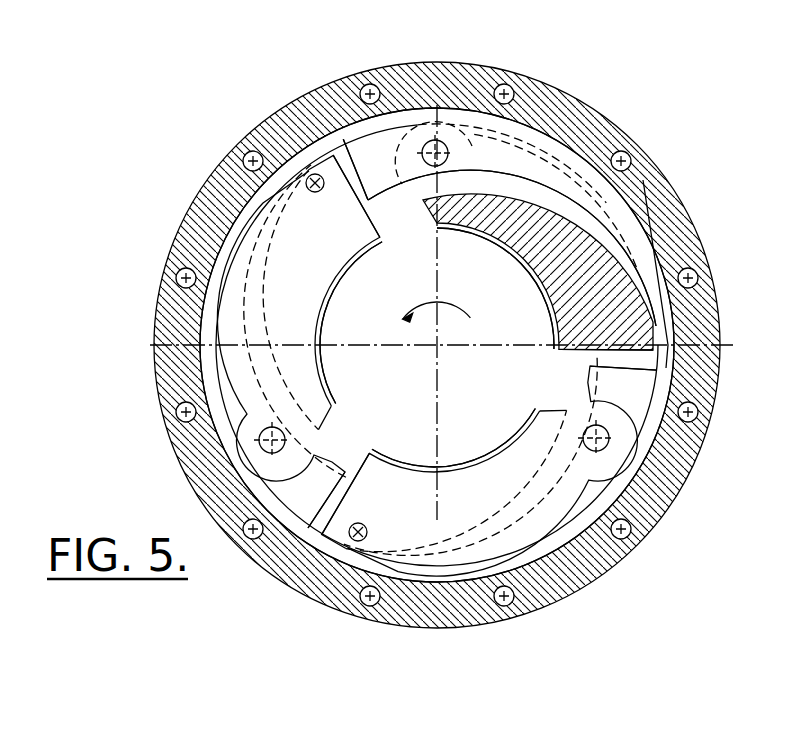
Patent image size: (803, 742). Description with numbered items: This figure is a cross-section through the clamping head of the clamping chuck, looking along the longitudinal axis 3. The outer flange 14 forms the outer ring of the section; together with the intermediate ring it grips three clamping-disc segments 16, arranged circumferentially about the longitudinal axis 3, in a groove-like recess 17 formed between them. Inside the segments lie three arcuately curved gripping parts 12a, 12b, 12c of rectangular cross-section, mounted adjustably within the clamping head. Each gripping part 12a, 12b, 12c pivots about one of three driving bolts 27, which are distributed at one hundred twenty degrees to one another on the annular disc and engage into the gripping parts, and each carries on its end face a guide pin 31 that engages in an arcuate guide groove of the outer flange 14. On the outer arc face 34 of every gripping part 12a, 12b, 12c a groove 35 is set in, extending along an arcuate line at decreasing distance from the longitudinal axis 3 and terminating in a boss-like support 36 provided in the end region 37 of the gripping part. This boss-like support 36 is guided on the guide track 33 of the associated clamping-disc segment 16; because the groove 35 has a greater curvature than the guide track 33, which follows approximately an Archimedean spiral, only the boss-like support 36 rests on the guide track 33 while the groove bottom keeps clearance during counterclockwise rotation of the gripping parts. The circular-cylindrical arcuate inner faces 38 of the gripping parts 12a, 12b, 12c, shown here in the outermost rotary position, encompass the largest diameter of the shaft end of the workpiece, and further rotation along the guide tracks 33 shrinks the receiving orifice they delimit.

The longitudinal axis 3 is at (440, 350).
The gripping part 12a is at (600, 230).
The gripping part 12b is at (233, 328).
The gripping part 12c is at (540, 525).
The outer flange 14 is at (207, 202).
The clamping-disc segment 16 is at (368, 150).
The recess 17 is at (657, 244).
The driving bolt 27 is at (440, 148).
The guide pin 31 is at (262, 132).
The guide track 33 is at (393, 205).
The outer arc face 34 is at (518, 130).
The groove 35 is at (548, 187).
The boss-like support 36 is at (313, 180).
The end region 37 is at (363, 252).
The arcuate inner face 38 is at (322, 318).